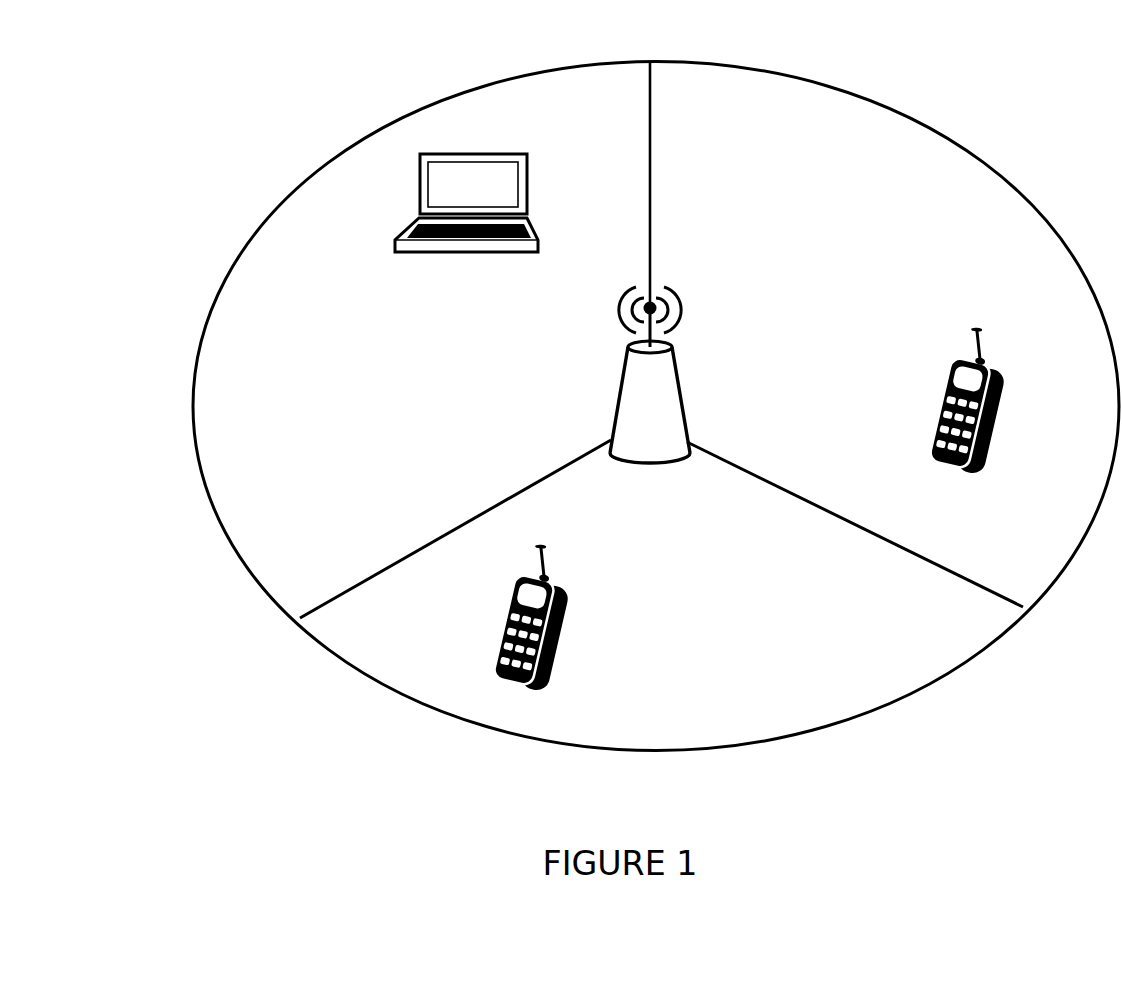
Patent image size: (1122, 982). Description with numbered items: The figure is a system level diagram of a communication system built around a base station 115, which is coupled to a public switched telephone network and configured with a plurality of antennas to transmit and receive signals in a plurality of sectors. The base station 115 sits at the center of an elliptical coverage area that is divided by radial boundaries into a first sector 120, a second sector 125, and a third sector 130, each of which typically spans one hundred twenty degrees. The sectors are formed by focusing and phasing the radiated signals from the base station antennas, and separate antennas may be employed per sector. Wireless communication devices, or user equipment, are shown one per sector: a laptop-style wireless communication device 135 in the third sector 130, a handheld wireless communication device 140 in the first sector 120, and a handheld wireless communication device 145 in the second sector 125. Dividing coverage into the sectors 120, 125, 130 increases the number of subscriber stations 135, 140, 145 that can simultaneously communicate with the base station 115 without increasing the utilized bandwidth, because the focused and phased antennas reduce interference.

The base station 115 is at (630, 440).
The first sector 120 is at (815, 290).
The second sector 125 is at (636, 612).
The third sector 130 is at (385, 384).
The wireless communication device 135 is at (457, 202).
The wireless communication device 140 is at (931, 394).
The wireless communication device 145 is at (495, 608).